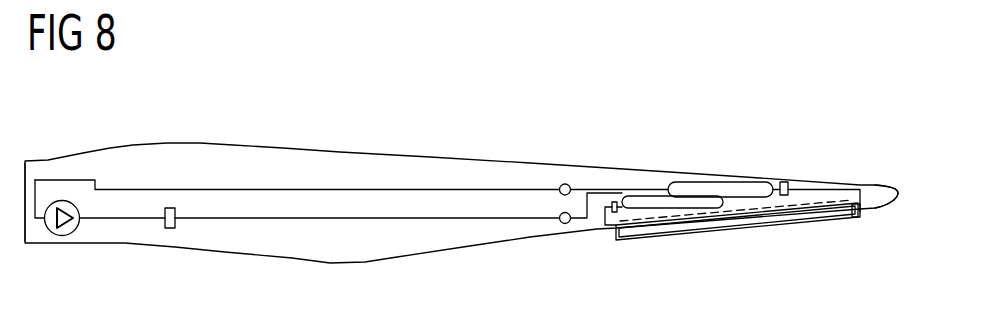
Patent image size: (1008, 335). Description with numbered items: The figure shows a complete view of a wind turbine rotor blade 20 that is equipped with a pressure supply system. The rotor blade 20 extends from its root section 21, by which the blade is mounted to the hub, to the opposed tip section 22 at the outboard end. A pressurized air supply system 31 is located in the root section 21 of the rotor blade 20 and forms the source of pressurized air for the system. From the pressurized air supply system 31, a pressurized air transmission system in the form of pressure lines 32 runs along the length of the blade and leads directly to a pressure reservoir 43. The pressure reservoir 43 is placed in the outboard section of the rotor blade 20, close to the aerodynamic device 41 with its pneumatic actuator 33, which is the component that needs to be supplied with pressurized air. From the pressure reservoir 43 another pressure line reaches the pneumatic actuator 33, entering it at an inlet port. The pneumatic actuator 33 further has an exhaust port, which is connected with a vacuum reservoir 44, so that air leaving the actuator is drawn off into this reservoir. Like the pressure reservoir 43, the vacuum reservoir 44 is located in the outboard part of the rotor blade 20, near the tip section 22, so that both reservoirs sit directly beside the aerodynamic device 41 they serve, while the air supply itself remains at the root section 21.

The rotor blade 20 is at (381, 122).
The root section 21 is at (48, 173).
The tip section 22 is at (877, 185).
The pressurized air supply system 31 is at (68, 229).
The pressure lines 32 is at (515, 217).
The pneumatic actuator 33 is at (667, 239).
The aerodynamic device 41 is at (757, 233).
The pressure reservoir 43 is at (653, 199).
The vacuum reservoir 44 is at (757, 181).